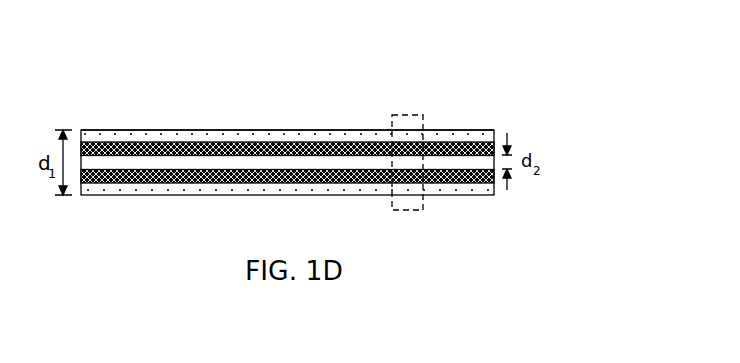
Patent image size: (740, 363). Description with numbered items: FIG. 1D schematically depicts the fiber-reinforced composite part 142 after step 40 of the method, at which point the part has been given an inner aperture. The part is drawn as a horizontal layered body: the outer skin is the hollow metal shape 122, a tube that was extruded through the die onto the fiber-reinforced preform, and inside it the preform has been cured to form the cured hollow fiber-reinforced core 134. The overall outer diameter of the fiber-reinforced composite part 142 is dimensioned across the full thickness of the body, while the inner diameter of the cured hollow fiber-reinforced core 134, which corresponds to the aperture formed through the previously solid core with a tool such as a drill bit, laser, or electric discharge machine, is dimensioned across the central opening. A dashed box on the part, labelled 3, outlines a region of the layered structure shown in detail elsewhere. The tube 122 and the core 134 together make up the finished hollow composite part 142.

The step 40 is at (460, 82).
The hollow metal shape 122 is at (131, 129).
The fiber-reinforced composite part 142 is at (230, 117).
The cured hollow fiber-reinforced core 134 is at (122, 172).
The detail region shown in FIG. 3 is at (410, 210).